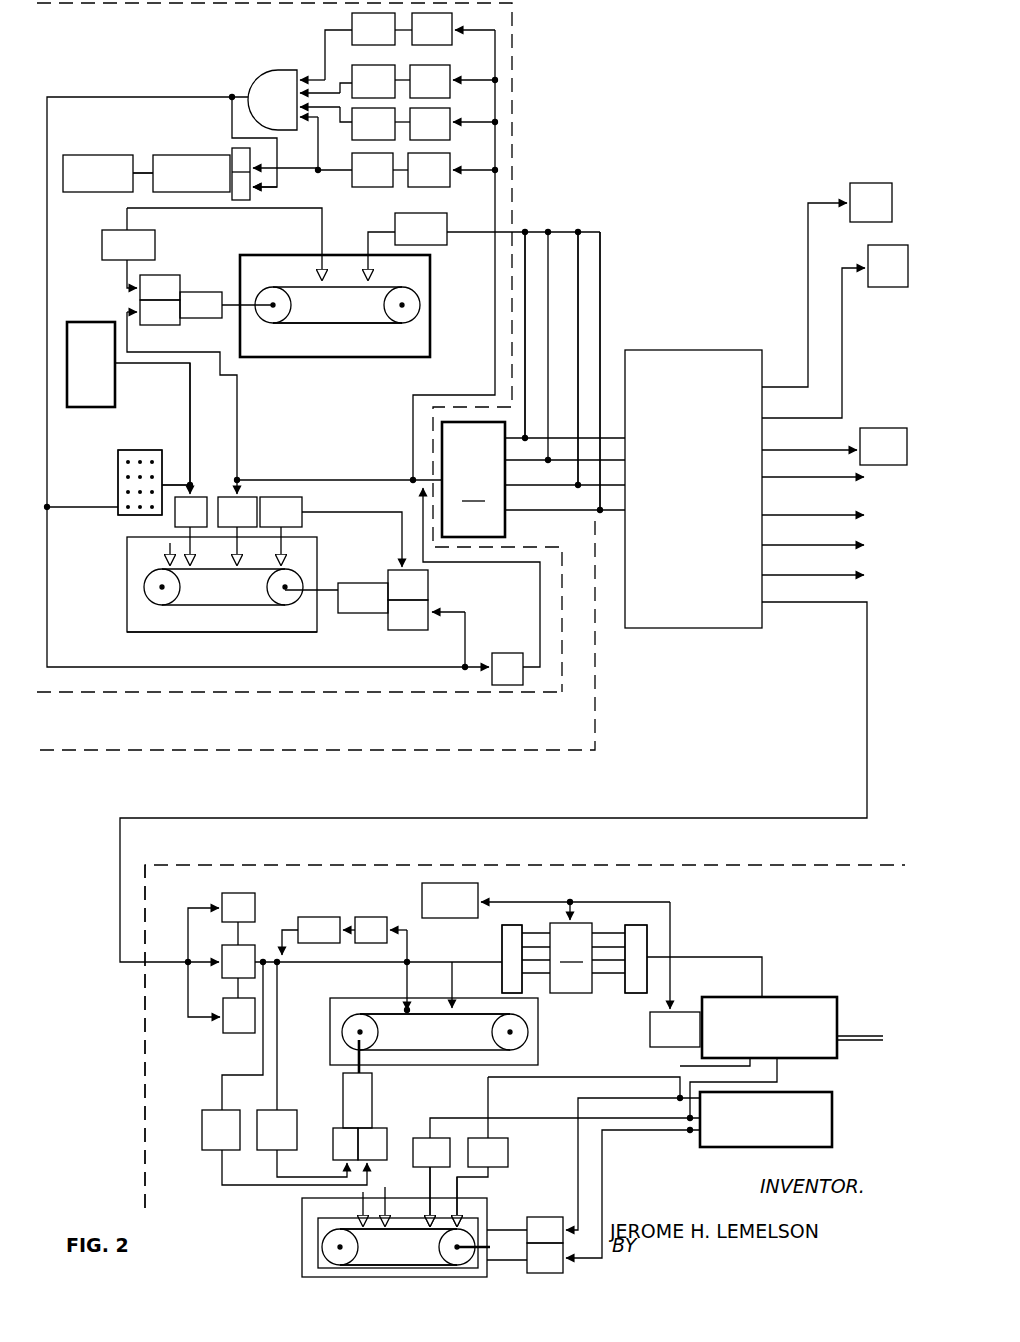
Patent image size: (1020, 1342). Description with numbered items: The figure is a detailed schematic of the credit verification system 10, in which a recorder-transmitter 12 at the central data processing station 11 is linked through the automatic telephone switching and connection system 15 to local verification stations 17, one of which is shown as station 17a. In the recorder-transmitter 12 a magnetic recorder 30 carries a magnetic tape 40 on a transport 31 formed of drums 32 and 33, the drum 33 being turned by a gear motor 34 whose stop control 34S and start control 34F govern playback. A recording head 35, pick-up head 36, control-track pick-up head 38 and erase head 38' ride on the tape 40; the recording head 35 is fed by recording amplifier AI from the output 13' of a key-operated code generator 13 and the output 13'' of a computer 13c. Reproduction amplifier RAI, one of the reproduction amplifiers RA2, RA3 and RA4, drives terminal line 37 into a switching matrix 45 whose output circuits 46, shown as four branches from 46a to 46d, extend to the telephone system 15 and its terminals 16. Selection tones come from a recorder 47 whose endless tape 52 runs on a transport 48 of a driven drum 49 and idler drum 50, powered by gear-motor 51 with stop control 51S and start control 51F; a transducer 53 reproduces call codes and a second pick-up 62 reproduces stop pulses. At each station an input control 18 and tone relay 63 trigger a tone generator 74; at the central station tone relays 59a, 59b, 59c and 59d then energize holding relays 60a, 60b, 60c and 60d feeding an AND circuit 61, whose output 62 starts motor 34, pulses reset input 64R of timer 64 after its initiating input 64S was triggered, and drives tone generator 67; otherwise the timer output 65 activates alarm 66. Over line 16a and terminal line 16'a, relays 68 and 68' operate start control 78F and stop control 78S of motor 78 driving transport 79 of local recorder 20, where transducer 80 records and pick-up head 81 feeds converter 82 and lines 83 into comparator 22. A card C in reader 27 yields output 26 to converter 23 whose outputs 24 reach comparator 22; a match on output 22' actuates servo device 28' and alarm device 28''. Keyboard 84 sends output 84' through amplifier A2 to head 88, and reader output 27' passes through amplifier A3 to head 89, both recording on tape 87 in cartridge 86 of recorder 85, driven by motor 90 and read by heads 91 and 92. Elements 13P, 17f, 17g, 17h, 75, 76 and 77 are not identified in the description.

The credit verification system 10 is at (577, 163).
The central data processing station 11 is at (258, 740).
The recorder-transmitter 12 is at (137, 688).
The manual key operated code generator 13 is at (118, 468).
The sensor panel 13P is at (118, 480).
The computer 13c is at (68, 405).
The output of code generator 13' is at (194, 464).
The output of data processing unit 13'' is at (207, 424).
The automatic telephone switching and connection system 15 is at (625, 628).
The terminals of telephone system 16 is at (813, 558).
The terminal line 16a is at (867, 750).
The terminal line 16'a is at (378, 929).
The local verification station 17 is at (142, 1092).
The verification station 17a is at (157, 993).
The output device 17f is at (834, 446).
The output device 17g is at (835, 331).
The output device 17h is at (827, 285).
The input control 18 is at (196, 1025).
The local magnetic recorder and reproduction unit 20 is at (340, 1077).
The comparator 22 is at (573, 958).
The output of comparator 22' is at (597, 898).
The series-to-parallel code converter 23 is at (648, 932).
The outputs of converter 24 is at (618, 993).
The output of reader 26 is at (720, 957).
The card reader 27 is at (772, 1012).
The output of card reader 27' is at (619, 1077).
The servo device 28' is at (654, 982).
The alarm device 28'' is at (529, 900).
The magnetic recorder 30 is at (317, 632).
The transport 31 is at (150, 612).
The drum 32 is at (160, 590).
The drum 33 is at (280, 625).
The constant speed gear motor 34 is at (372, 582).
The stop control 34S is at (408, 585).
The start control 34F is at (428, 635).
The recording head 35 is at (185, 562).
The pick-up head 36 is at (232, 565).
The output of reproduction amplifier 37 is at (285, 480).
The pick-up head 38 is at (290, 548).
The erase head 38' is at (126, 556).
The magnetic recording tape 40 is at (182, 615).
The switching matrix 45 is at (533, 384).
The output circuits 46 is at (610, 525).
The branch output circuit 46a is at (535, 450).
The branch output circuit 46d is at (565, 512).
The magnetic recorder 47 is at (270, 357).
The tape transport 48 is at (405, 322).
The drum 49 is at (265, 290).
The idler drum 50 is at (415, 298).
The constant speed gear-motor 51 is at (208, 285).
The stop control 51S is at (160, 287).
The start control 51F is at (182, 390).
The endless loop magnetic tape 52 is at (320, 323).
The first reproduction transducer 53 is at (366, 262).
The tone responsive relay 59a is at (453, 170).
The tone responsive relay 59b is at (454, 124).
The tone responsive relay 59c is at (454, 81).
The tone responsive relay 59d is at (453, 29).
The holding relay 60a is at (380, 170).
The holding relay 60b is at (381, 124).
The holding relay 60c is at (381, 81).
The holding relay 60d is at (382, 29).
The AND circuit 61 is at (284, 72).
The second magnetic pick-up transducer 62 is at (178, 98).
The second tone responsive relay 63 is at (381, 939).
The timer 64 is at (175, 158).
The initiating input 64S is at (262, 166).
The reset input 64R is at (262, 190).
The output of timer 65 is at (148, 168).
The alarm 66 is at (70, 158).
The tone generator 67 is at (512, 665).
The tone responsive relay 68 is at (277, 1056).
The second tone responsive relay 68' is at (232, 1056).
The tone generator 74 is at (326, 930).
The conveyor belt 75 is at (360, 1012).
The idler roller 76 is at (513, 1034).
The drive roller 77 is at (357, 1032).
The motor 78 is at (372, 1090).
The start-control 78F is at (338, 1150).
The stop-control 78S is at (372, 1152).
The tape transport 79 is at (435, 1065).
The magnetic recording transducer 80 is at (403, 1010).
The code pick-up head 81 is at (454, 1008).
The series-to-parallel converter 82 is at (502, 945).
The lines 83 is at (535, 993).
The keyboard signal generator 84 is at (717, 1166).
The output of keyboard 84' is at (603, 1098).
The magnetic recorder 85 is at (298, 1218).
The cartridge 86 is at (322, 1245).
The magnetic tape 87 is at (360, 1268).
The recording head 88 is at (428, 1222).
The second recording head 89 is at (460, 1220).
The motor 90 is at (497, 1242).
The magnetic reproduction head 91 is at (360, 1222).
The magnetic reproduction head 92 is at (398, 1247).
The recording amplifier A2 is at (431, 1182).
The recording amplifier A3 is at (482, 1151).
The recording amplifier AI is at (191, 506).
The reproduction amplifier RAI is at (237, 503).
The reproduction amplifier RA2 is at (331, 532).
The reproduction amplifier RA3 is at (497, 229).
The reproduction amplifier RA4 is at (128, 248).
The card C is at (848, 1034).